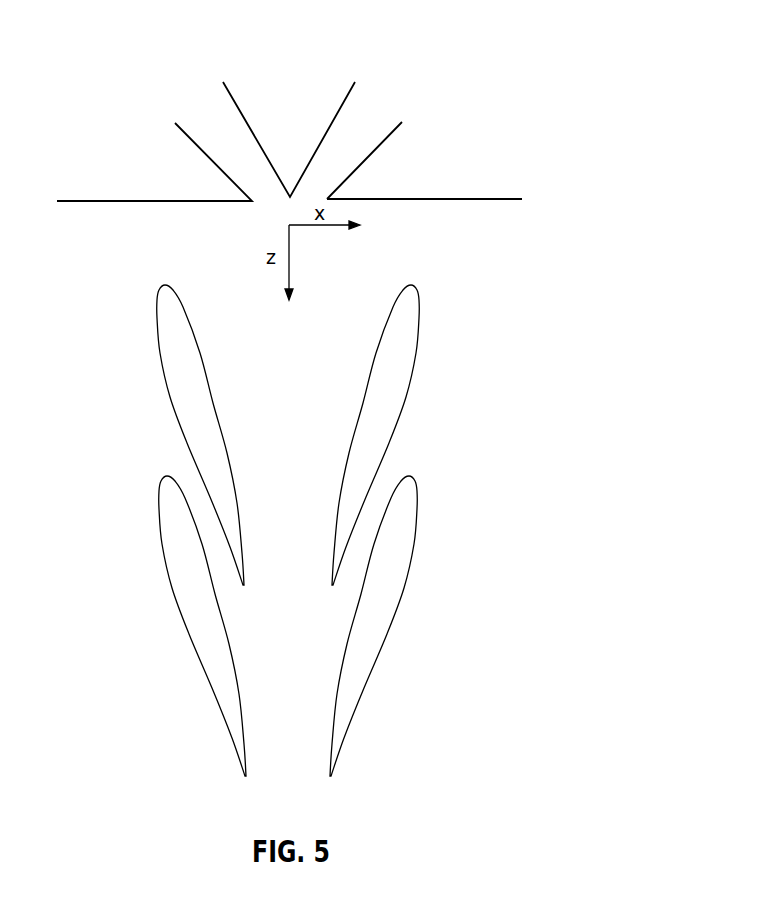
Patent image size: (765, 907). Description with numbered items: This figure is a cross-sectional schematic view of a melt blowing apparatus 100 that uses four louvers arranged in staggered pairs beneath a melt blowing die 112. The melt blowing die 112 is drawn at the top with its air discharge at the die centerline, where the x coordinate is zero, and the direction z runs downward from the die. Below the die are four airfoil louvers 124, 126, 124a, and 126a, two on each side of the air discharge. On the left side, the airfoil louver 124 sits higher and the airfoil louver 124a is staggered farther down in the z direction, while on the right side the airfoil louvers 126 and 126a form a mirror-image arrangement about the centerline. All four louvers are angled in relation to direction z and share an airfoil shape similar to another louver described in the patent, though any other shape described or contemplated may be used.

The melt blowing apparatus 100 is at (296, 106).
The melt blowing die 112 is at (450, 148).
The airfoil louver 124 is at (160, 357).
The airfoil louver 124a is at (160, 549).
The airfoil louver 126 is at (416, 364).
The airfoil louver 126a is at (416, 556).